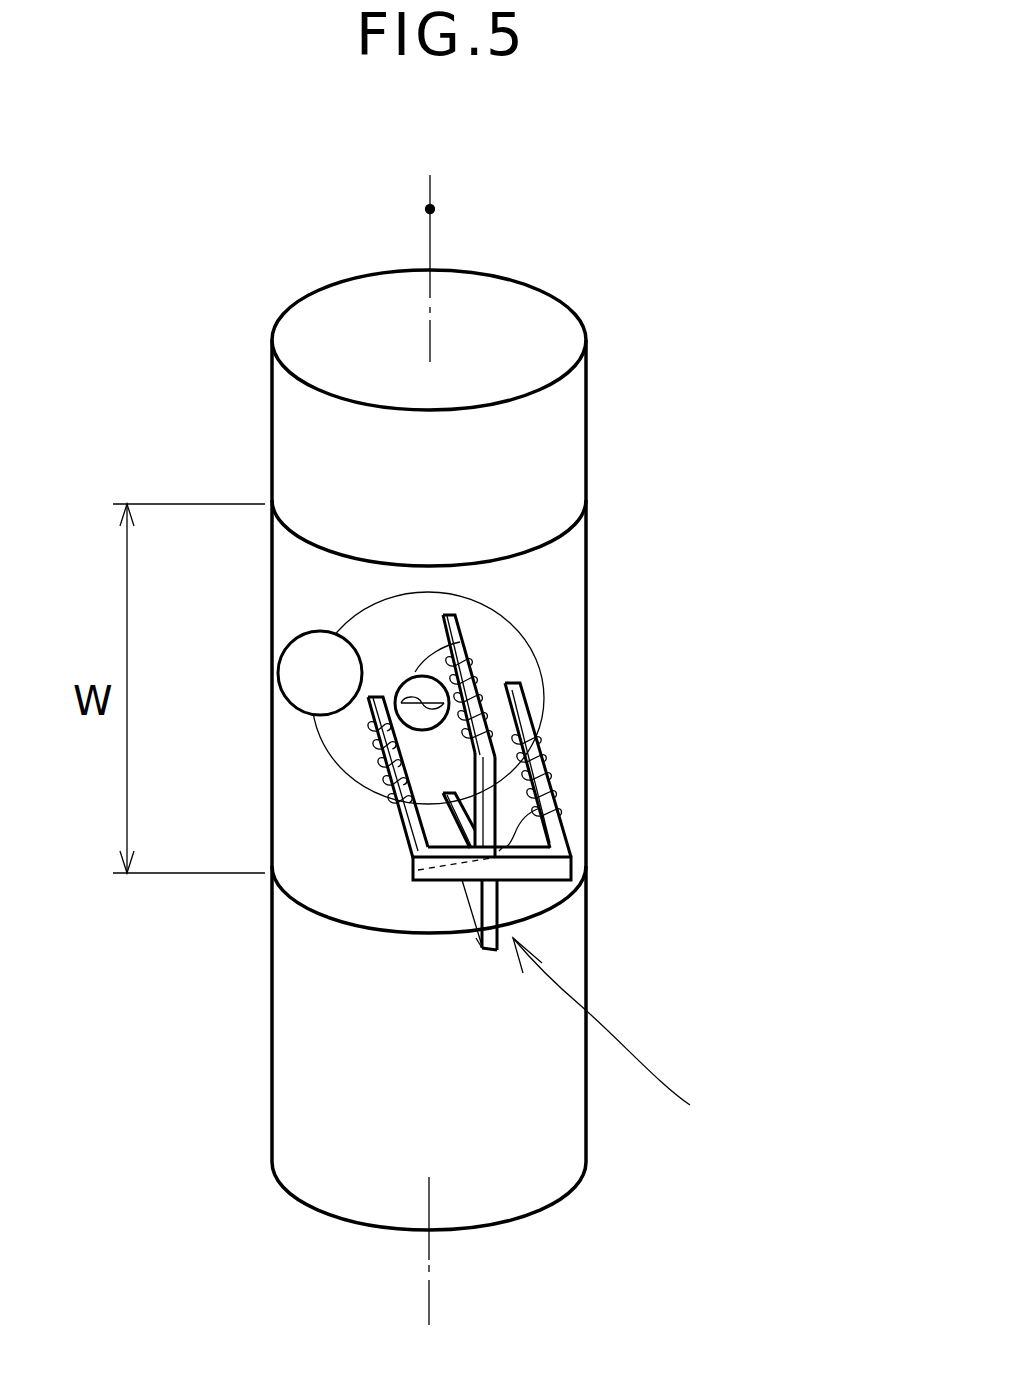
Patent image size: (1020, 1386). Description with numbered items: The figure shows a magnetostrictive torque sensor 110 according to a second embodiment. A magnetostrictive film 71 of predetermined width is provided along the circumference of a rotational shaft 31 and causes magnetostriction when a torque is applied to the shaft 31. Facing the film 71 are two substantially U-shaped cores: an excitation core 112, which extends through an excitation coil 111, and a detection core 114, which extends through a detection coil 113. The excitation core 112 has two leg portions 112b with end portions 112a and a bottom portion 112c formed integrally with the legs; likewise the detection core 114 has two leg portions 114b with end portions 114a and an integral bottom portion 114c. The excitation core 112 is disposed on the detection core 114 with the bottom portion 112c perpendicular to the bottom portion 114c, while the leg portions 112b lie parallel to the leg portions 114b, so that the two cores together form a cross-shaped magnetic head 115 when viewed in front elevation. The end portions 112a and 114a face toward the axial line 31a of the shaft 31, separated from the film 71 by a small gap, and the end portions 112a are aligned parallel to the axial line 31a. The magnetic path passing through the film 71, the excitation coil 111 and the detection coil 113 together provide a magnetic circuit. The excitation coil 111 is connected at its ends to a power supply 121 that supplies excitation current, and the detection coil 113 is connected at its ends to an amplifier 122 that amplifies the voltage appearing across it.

The rotational shaft 31 is at (335, 342).
The axial line 31a is at (428, 209).
The magnetostrictive film 71 is at (327, 880).
The magnetostrictive torque sensor 110 is at (677, 269).
The excitation coil 111 is at (530, 630).
The excitation core 112 is at (493, 781).
The end portion 112a is at (451, 615).
The leg portion 112b is at (497, 652).
The bottom portion 112c is at (470, 1009).
The detection coil 113 is at (547, 753).
The detection core 114 is at (479, 795).
The end portion 114a is at (371, 722).
The leg portion 114b is at (382, 768).
The bottom portion 114c is at (540, 872).
The magnetic head 115 is at (634, 1032).
The power supply 121 is at (399, 683).
The amplifier 122 is at (291, 644).